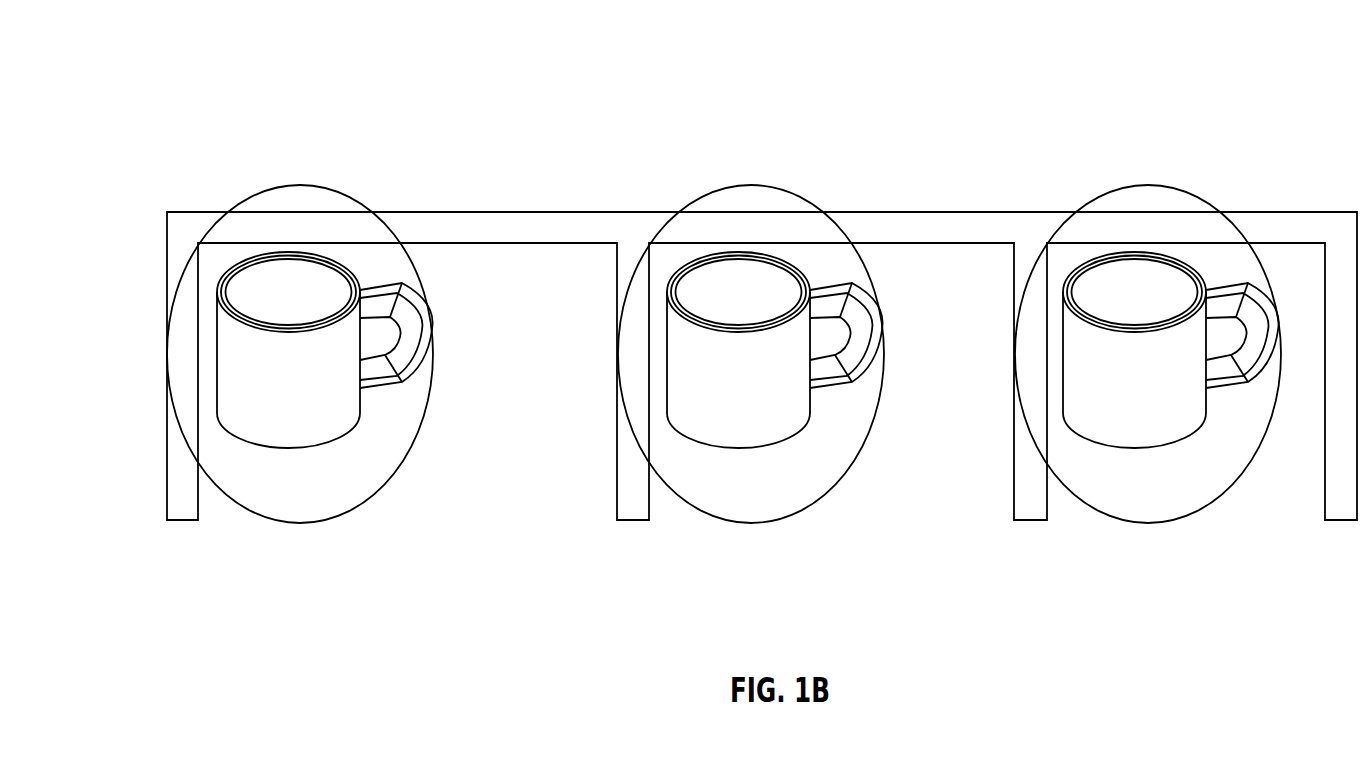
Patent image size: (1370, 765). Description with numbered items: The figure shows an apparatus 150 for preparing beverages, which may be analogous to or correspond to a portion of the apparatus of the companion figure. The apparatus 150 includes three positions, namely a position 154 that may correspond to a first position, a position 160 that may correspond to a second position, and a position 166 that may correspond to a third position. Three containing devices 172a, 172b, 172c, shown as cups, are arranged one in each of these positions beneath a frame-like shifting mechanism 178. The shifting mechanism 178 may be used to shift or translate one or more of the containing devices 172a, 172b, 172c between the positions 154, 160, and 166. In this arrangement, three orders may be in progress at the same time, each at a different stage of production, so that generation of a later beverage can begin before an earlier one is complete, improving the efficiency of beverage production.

The apparatus 150 is at (170, 113).
The first position 154 is at (1098, 197).
The second position 160 is at (701, 197).
The third position 166 is at (250, 197).
The containing device 172a is at (1131, 452).
The containing device 172b is at (735, 452).
The containing device 172c is at (285, 452).
The shifting mechanism 178 is at (167, 260).